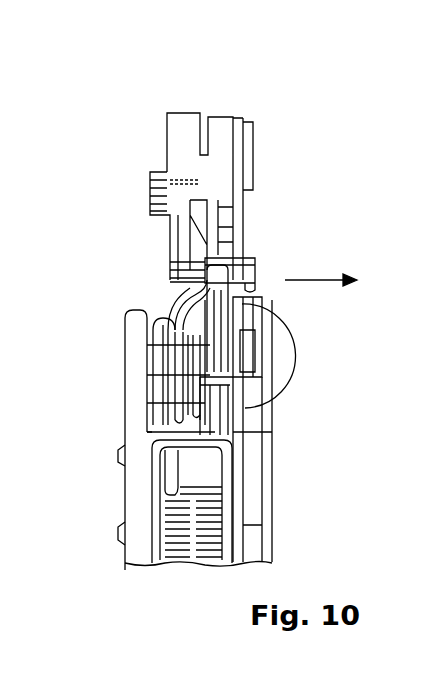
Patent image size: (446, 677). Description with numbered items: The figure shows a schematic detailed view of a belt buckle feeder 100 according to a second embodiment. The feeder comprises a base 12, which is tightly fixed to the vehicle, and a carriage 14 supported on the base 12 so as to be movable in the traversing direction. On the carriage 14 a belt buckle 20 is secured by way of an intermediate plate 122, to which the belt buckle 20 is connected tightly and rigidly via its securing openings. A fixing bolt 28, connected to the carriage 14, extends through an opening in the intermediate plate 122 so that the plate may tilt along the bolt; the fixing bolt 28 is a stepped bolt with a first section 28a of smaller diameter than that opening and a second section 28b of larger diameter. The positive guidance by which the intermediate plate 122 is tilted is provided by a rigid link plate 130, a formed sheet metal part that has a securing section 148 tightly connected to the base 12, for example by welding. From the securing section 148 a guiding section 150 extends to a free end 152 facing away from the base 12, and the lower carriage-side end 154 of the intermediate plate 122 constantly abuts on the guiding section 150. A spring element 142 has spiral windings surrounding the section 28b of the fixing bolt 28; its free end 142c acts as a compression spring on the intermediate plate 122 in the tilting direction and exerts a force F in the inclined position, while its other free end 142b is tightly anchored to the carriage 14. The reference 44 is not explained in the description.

The belt buckle feeder 100 is at (151, 78).
The belt buckle 20 is at (170, 142).
The free end of the spring element 142c is at (246, 268).
The force direction F is at (312, 278).
The fixing bolt 28 is at (122, 322).
The first section 28a is at (258, 352).
The intermediate plate 122 is at (225, 310).
The link plate 130 is at (246, 362).
The guiding section 150 is at (214, 386).
The lower carriage-side end 154 is at (218, 428).
The free end 152 is at (170, 300).
The free end of the spring element 142b is at (162, 322).
The spring element 142 is at (165, 348).
The second section 28b is at (148, 372).
The spring element 44 is at (160, 405).
The carriage 14 is at (122, 518).
The base 12 is at (152, 500).
The securing section 148 is at (186, 565).